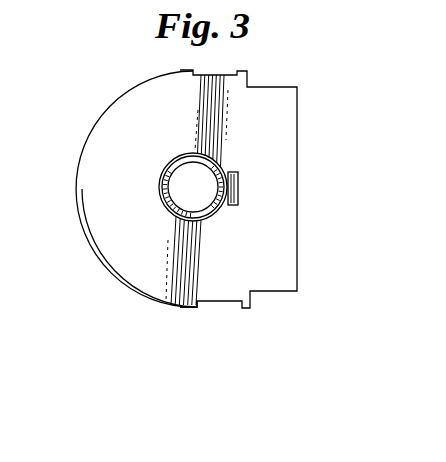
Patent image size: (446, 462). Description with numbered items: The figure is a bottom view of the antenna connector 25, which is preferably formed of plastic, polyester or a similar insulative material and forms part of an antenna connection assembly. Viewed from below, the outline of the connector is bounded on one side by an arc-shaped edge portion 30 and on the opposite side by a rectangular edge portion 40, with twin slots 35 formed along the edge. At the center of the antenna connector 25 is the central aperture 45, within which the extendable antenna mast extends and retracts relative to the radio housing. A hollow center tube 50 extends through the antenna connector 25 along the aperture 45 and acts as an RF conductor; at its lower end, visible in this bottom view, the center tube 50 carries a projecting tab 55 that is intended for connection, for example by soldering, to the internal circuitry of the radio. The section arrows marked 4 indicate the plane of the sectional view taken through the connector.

The section line 4- 4 is at (65, 190).
The antenna connector 25 is at (128, 112).
The arc-shaped edge portion 30 is at (122, 278).
The twin slots 35 is at (216, 305).
The rectangular edge portion 40 is at (297, 207).
The central aperture 45 is at (195, 180).
The hollow center tube 50 is at (226, 205).
The projecting tab 55 is at (239, 198).